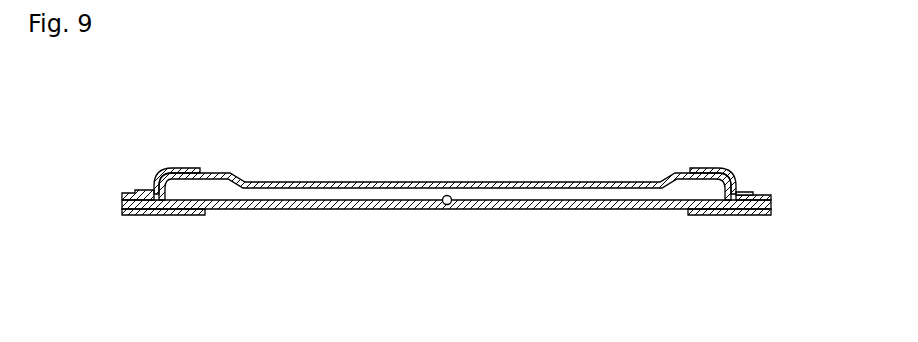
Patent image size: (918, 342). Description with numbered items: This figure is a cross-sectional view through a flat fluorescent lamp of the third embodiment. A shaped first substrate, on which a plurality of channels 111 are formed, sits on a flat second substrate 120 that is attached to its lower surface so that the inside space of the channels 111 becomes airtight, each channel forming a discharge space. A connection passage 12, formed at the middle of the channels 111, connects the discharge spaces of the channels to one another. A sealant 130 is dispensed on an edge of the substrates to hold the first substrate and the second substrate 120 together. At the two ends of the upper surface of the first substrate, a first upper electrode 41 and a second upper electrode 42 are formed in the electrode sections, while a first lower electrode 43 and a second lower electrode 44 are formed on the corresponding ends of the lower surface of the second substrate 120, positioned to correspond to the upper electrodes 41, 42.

The channels 111 is at (392, 182).
The second substrate 120 is at (316, 210).
The connection passage 12 is at (446, 208).
The first upper electrode 41 is at (172, 169).
The second upper electrode 42 is at (722, 169).
The first lower electrode 43 is at (160, 216).
The second lower electrode 44 is at (708, 216).
The sealant 130 is at (752, 216).